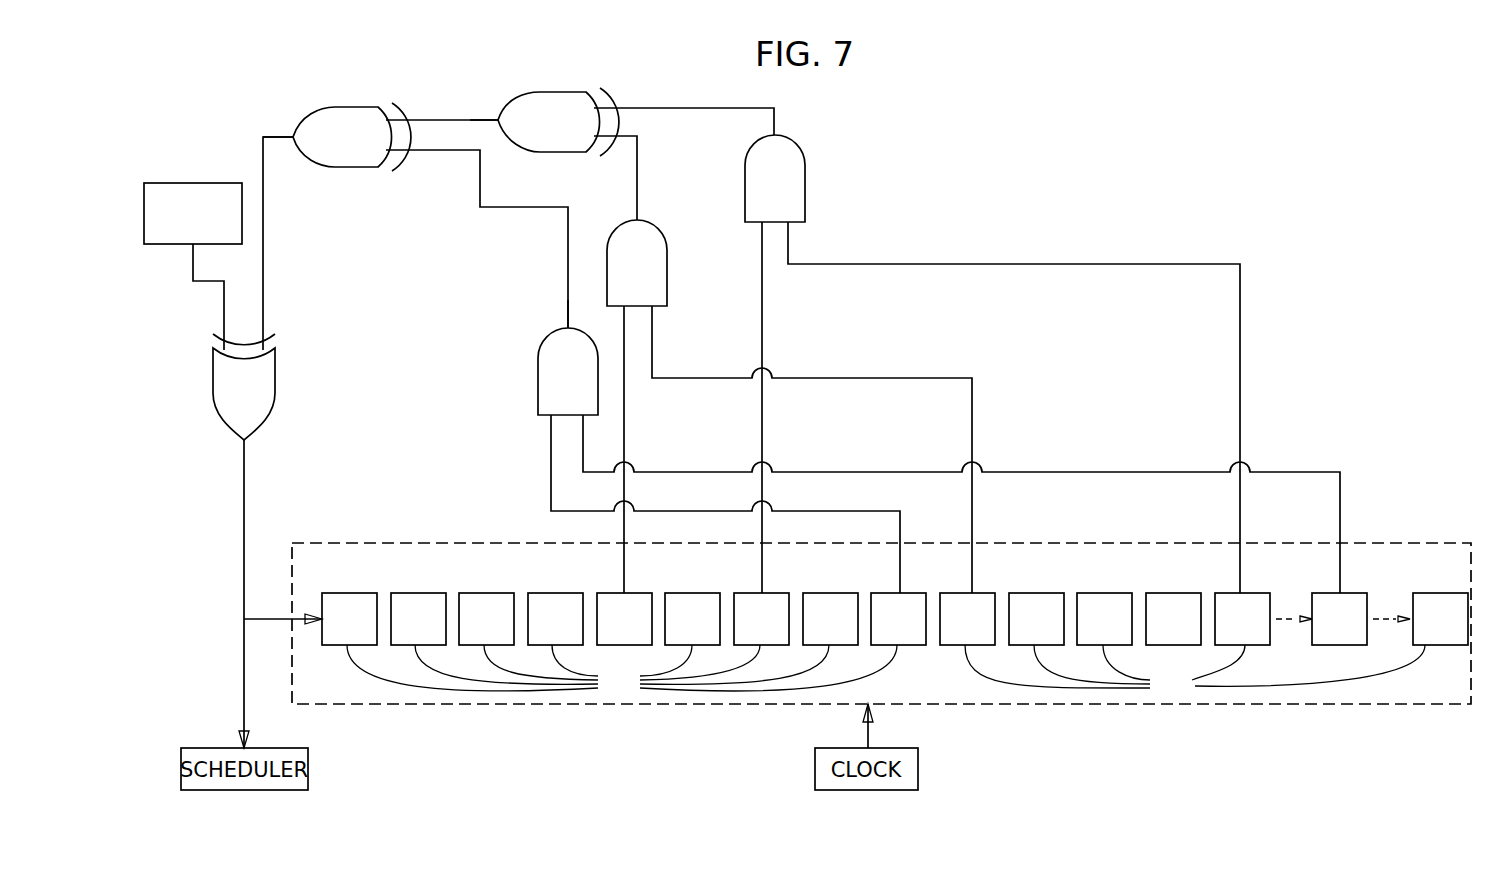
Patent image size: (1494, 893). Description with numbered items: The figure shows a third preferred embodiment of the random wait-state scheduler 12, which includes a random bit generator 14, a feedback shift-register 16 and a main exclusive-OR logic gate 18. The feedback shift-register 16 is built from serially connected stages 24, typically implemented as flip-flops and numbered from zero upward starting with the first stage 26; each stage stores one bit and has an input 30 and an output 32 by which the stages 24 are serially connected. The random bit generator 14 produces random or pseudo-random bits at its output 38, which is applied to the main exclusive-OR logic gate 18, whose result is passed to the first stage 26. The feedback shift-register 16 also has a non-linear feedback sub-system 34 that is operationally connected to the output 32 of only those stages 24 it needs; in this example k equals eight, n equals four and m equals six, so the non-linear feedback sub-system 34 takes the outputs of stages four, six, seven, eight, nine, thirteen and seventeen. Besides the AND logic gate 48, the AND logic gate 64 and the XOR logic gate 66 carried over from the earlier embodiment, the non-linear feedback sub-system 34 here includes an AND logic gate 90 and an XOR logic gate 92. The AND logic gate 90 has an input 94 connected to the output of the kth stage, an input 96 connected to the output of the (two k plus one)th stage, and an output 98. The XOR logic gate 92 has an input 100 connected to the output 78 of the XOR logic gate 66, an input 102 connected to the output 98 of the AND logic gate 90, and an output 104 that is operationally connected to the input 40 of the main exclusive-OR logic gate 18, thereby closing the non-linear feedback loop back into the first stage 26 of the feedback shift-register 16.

The random wait-state scheduler 12 is at (240, 66).
The random bit generator 14 is at (199, 183).
The feedback shift-register 16 is at (881, 600).
The main exclusive-OR logic gate 18 is at (213, 372).
The stages 24 is at (886, 670).
The first stage 26 is at (360, 593).
The input 30 is at (318, 615).
The output 32 is at (622, 593).
The non-linear feedback sub-system 34 is at (838, 140).
The output 38 is at (193, 248).
The input 40 is at (263, 340).
The AND logic gate 48 is at (667, 272).
The AND logic gate 64 is at (805, 190).
The XOR logic gate 66 is at (546, 92).
The output 78 is at (498, 120).
The AND logic gate 90 is at (538, 372).
The XOR logic gate 92 is at (340, 107).
The input 94 is at (551, 418).
The input 96 is at (583, 418).
The output 98 is at (567, 328).
The input 100 is at (393, 125).
The input 102 is at (396, 155).
The output 104 is at (291, 137).